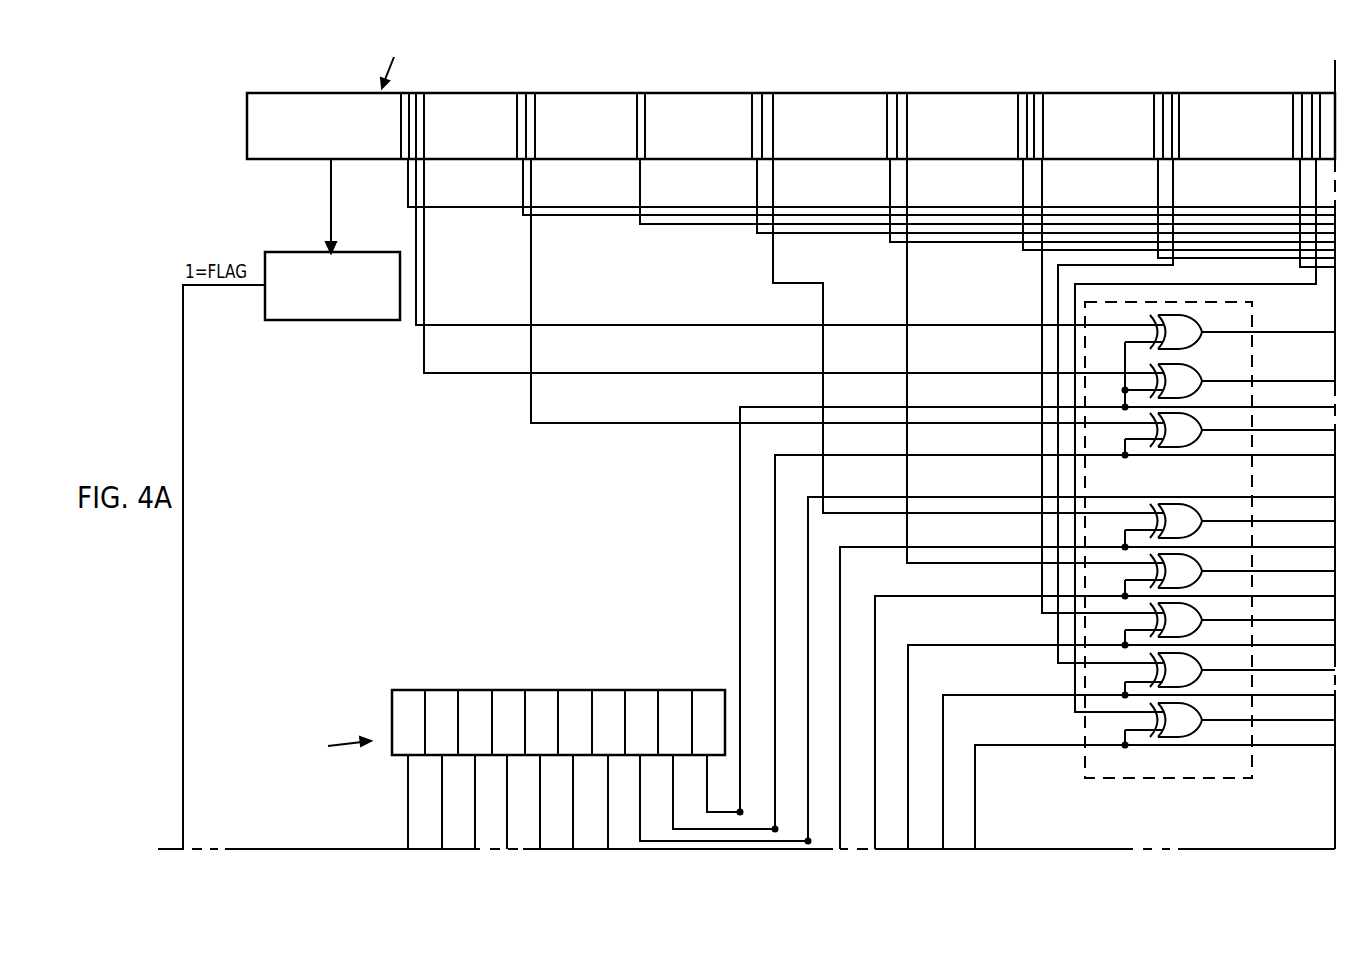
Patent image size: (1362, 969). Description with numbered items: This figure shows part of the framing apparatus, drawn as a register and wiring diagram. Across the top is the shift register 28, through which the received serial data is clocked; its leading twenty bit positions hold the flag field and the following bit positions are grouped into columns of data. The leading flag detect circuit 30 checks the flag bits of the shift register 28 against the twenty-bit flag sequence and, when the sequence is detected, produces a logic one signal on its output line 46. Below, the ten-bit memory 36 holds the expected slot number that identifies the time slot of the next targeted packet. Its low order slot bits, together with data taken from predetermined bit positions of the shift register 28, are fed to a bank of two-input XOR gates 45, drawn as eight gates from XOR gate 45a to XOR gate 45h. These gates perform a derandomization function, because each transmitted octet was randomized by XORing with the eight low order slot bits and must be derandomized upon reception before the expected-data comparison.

The shift register 28 is at (248, 93).
The leading flag detect circuit 30 is at (282, 313).
The 10-bit memory 36 is at (392, 690).
The XOR gates 45 is at (1250, 316).
The XOR gate 45a is at (1185, 337).
The XOR gate 45h is at (1187, 730).
The output line 46 is at (188, 668).